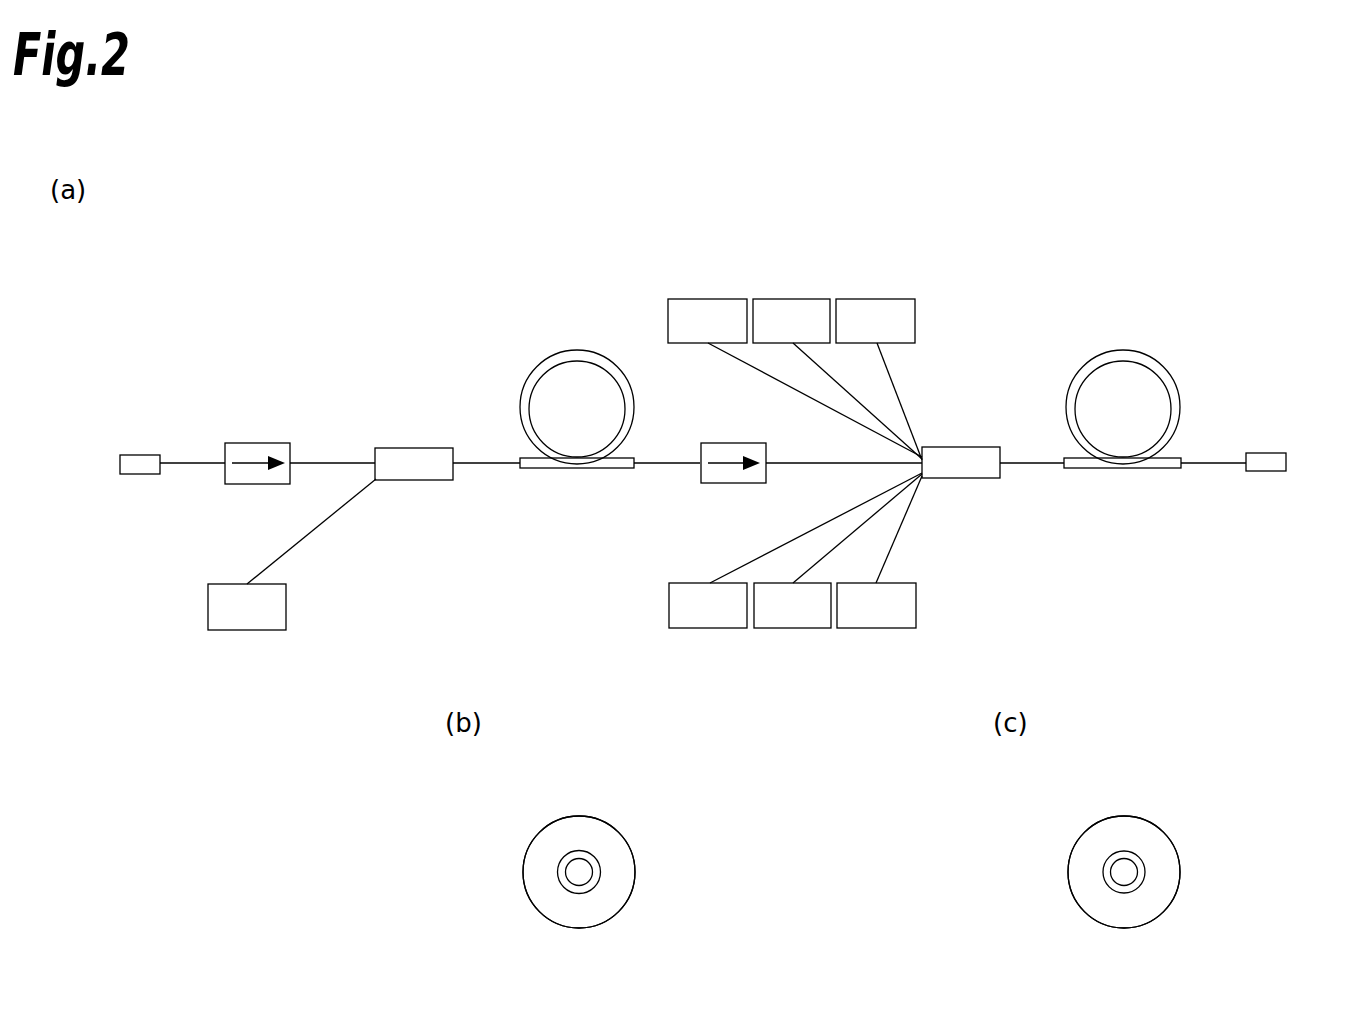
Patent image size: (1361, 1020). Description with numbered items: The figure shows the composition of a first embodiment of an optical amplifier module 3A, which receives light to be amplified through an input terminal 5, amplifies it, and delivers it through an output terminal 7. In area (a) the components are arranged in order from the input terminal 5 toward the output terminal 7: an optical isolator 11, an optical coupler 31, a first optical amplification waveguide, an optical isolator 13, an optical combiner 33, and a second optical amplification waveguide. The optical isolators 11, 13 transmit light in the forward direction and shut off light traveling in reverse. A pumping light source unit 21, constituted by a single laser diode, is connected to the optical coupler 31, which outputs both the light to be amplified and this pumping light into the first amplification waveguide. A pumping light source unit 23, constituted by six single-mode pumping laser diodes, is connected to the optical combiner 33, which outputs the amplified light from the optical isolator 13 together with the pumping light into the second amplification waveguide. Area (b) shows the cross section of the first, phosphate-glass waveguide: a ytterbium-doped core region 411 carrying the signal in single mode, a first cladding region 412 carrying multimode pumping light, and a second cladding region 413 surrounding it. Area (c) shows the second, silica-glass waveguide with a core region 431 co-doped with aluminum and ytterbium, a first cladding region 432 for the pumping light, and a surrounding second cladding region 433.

The optical amplifier module 3A is at (1250, 248).
The input terminal 5 is at (146, 455).
The output terminal 7 is at (1267, 453).
The optical isolator 11 is at (259, 443).
The optical isolator 13 is at (735, 443).
The pumping light source unit 21 is at (236, 640).
The pumping light source unit 23 is at (776, 638).
The optical coupler 31 is at (419, 448).
The optical combiner 33 is at (966, 447).
The core region 411 is at (582, 875).
The first cladding region 412 is at (595, 870).
The second cladding region 413 is at (617, 848).
The core region 431 is at (1128, 873).
The first cladding region 432 is at (1143, 870).
The second cladding region 433 is at (1163, 848).